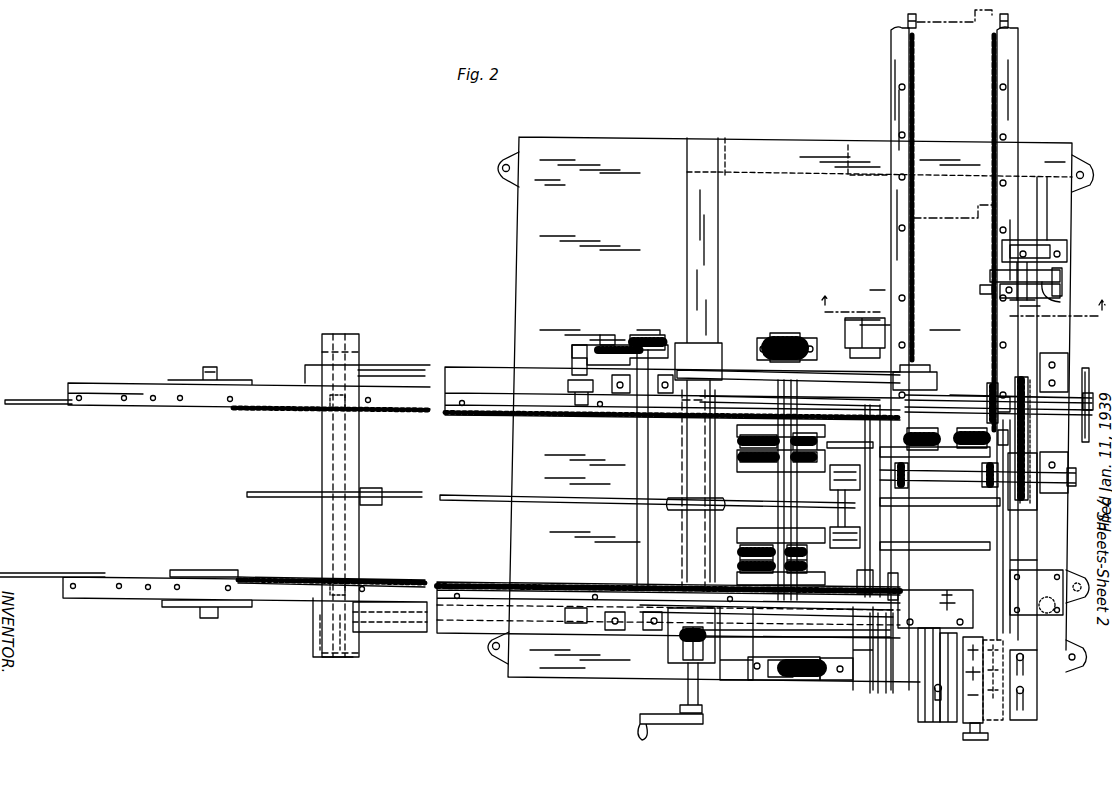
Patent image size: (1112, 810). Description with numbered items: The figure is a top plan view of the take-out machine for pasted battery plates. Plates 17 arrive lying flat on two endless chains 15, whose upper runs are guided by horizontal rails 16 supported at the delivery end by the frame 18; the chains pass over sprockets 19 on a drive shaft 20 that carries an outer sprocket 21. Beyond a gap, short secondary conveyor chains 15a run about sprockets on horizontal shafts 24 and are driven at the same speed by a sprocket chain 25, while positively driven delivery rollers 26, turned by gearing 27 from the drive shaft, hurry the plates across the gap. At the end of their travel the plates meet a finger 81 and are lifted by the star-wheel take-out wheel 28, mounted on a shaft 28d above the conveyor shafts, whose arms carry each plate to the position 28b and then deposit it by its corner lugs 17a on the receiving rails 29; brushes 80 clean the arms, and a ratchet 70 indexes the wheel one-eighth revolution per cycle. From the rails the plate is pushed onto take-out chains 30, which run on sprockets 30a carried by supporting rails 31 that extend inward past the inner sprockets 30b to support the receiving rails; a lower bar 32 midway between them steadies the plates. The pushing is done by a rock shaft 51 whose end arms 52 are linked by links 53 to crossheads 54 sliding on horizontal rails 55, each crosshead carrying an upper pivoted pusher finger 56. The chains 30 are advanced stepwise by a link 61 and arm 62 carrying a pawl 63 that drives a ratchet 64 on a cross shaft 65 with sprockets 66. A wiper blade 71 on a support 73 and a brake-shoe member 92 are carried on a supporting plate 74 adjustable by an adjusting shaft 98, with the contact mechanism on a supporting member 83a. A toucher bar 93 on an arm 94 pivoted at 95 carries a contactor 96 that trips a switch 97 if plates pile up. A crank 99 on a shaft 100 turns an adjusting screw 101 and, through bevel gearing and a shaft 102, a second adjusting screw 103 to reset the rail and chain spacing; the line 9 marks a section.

The section line 9 is at (965, 294).
The endless chains 15 is at (906, 22).
The short secondary conveyor chains 15a is at (905, 502).
The horizontal guide rails 16 is at (898, 82).
The double storage battery plates 17 is at (943, 213).
The lugs 17a is at (955, 200).
The frame 18 is at (1072, 213).
The sprockets 19 is at (945, 396).
The drive shaft 20 is at (948, 405).
The sprocket 21 is at (1090, 368).
The horizontal shafts 24 is at (942, 482).
The sprocket chain 25 is at (1030, 432).
The delivery rollers 26 is at (930, 452).
The gearing 27 is at (1020, 378).
The take-out wheel 28 is at (830, 452).
The arm position 28b is at (915, 547).
The shaft 28d is at (870, 500).
The receiving rails 29 is at (800, 404).
The take-out chains 30 is at (500, 408).
The sprockets 30a is at (192, 578).
The inner sprockets 30b is at (780, 625).
The supporting rails 31 is at (402, 404).
The lower bar or rail 32 is at (478, 498).
The rock shaft 51 is at (776, 480).
The arms 52 is at (815, 357).
The links 53 is at (862, 330).
The crossheads 54 is at (930, 375).
The horizontal rails 55 is at (735, 368).
The upper pivoted pusher finger 56 is at (920, 450).
The link 61 is at (570, 362).
The arm 62 is at (590, 345).
The pawl 63 is at (620, 335).
The ratchet 64 is at (660, 342).
The cross shaft 65 is at (640, 455).
The sprockets 66 is at (638, 448).
The ratchet 70 is at (855, 586).
The wiper blade 71 is at (1010, 600).
The support 73 is at (946, 722).
The supporting plate 74 is at (912, 722).
The wipers or brushes 80 is at (740, 437).
The finger 81 is at (945, 596).
The supporting member 83a is at (1037, 712).
The supporting member 92 is at (968, 723).
The toucher bar 93 is at (983, 292).
The arm 94 is at (1068, 306).
The pivot 95 is at (1062, 281).
The contactor 96 is at (1028, 258).
The switch 97 is at (1068, 251).
The adjusting shaft 98 is at (988, 735).
The crank 99 is at (668, 725).
The shaft 100 is at (688, 685).
The adjusting screw 101 is at (700, 522).
The shaft 102 is at (490, 635).
The second adjusting screw 103 is at (352, 562).